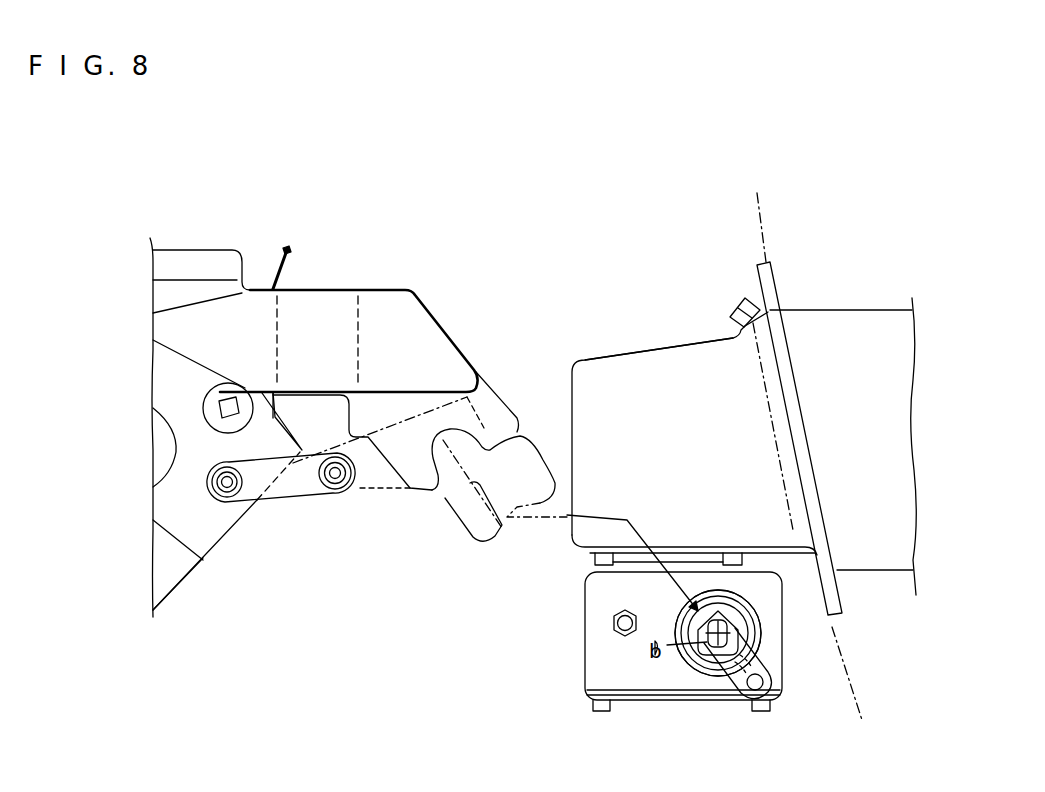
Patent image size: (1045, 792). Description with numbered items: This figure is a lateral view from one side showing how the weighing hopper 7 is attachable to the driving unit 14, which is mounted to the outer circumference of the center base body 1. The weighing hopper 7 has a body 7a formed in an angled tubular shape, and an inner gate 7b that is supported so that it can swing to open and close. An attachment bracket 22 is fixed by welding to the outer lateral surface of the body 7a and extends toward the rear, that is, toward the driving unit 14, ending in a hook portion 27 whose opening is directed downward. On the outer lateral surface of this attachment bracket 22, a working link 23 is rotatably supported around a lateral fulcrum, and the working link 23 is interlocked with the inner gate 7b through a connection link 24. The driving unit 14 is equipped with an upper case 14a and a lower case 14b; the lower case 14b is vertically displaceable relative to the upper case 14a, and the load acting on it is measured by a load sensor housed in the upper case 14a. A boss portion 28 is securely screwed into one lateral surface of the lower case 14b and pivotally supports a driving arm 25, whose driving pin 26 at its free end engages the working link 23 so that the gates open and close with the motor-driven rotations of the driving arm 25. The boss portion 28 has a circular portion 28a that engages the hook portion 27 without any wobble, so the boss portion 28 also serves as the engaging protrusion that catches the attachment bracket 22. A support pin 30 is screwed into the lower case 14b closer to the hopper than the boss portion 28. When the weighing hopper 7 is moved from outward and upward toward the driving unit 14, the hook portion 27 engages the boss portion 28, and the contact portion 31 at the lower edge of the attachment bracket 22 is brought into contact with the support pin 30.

The center base body 1 is at (757, 233).
The weighing hopper 7 is at (235, 247).
The body 7a is at (183, 251).
The inner gate 7b is at (177, 589).
The driving unit 14 is at (684, 344).
The upper case 14a is at (622, 355).
The lower case 14b is at (590, 668).
The attachment bracket 22 is at (421, 313).
The working link 23 is at (362, 496).
The connection link 24 is at (287, 500).
The driving arm 25 is at (735, 692).
The driving pin 26 is at (773, 677).
The hook portion 27 is at (490, 442).
The boss portion 28 is at (697, 661).
The circular portion 28a is at (748, 613).
The support pin 30 is at (608, 621).
The contact portion 31 is at (348, 447).